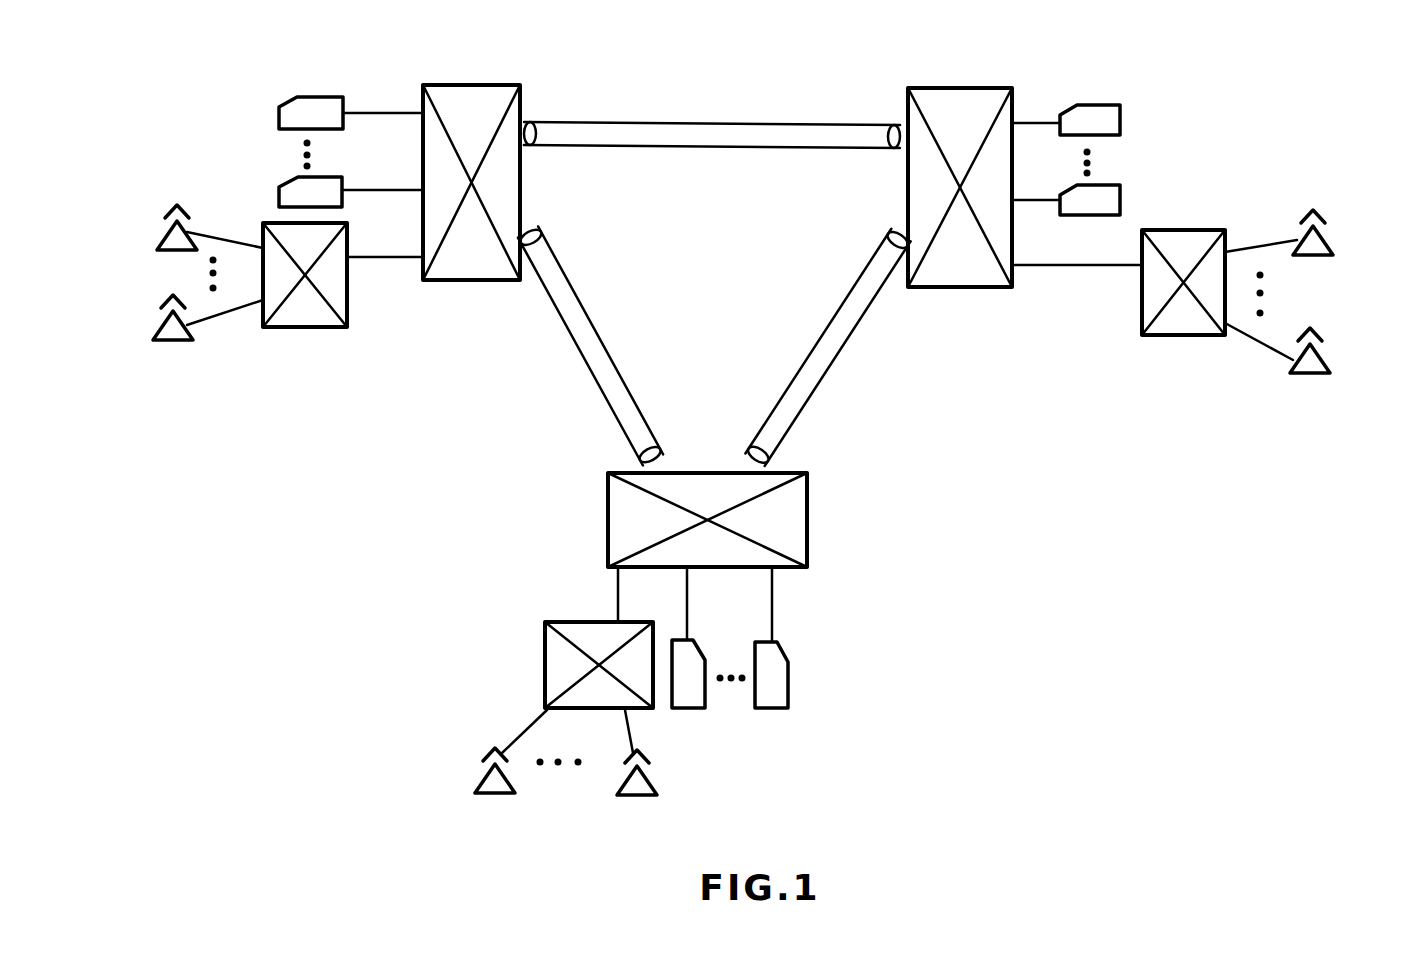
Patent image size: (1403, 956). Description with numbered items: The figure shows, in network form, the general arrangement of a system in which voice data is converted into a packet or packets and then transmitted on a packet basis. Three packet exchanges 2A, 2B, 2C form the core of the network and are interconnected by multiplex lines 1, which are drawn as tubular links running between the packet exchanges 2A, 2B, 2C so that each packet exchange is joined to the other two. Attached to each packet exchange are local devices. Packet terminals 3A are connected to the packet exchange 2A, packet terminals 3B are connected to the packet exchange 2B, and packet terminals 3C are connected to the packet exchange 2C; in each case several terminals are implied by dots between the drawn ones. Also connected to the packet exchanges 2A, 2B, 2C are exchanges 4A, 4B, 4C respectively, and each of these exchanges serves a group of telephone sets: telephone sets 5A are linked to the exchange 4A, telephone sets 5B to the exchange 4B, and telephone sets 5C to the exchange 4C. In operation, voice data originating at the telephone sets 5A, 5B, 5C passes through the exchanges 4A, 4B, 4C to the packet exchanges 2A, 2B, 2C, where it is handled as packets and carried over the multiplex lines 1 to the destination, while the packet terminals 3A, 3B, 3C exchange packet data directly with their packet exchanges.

The multiplex lines 1 is at (682, 122).
The packet exchange 2A is at (470, 85).
The packet exchange 2B is at (957, 88).
The packet exchange 2C is at (808, 530).
The packet terminal 3A is at (320, 95).
The packet terminal 3B is at (1093, 105).
The packet terminal 3C is at (692, 710).
The exchange 4A is at (305, 330).
The exchange 4B is at (1190, 230).
The exchange 4C is at (545, 663).
The telephone set 5A is at (157, 237).
The telephone set 5B is at (1333, 245).
The telephone set 5C is at (495, 798).